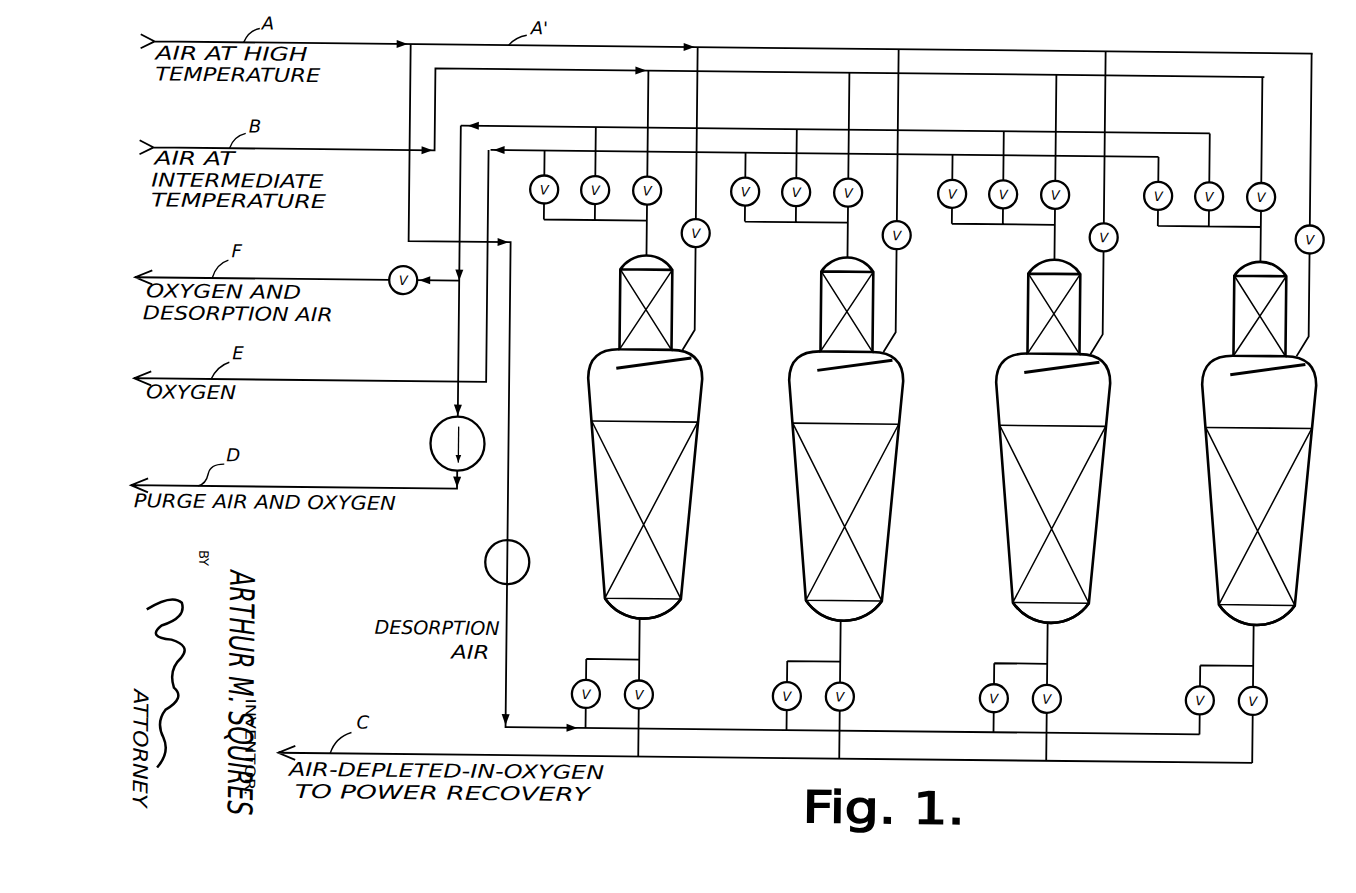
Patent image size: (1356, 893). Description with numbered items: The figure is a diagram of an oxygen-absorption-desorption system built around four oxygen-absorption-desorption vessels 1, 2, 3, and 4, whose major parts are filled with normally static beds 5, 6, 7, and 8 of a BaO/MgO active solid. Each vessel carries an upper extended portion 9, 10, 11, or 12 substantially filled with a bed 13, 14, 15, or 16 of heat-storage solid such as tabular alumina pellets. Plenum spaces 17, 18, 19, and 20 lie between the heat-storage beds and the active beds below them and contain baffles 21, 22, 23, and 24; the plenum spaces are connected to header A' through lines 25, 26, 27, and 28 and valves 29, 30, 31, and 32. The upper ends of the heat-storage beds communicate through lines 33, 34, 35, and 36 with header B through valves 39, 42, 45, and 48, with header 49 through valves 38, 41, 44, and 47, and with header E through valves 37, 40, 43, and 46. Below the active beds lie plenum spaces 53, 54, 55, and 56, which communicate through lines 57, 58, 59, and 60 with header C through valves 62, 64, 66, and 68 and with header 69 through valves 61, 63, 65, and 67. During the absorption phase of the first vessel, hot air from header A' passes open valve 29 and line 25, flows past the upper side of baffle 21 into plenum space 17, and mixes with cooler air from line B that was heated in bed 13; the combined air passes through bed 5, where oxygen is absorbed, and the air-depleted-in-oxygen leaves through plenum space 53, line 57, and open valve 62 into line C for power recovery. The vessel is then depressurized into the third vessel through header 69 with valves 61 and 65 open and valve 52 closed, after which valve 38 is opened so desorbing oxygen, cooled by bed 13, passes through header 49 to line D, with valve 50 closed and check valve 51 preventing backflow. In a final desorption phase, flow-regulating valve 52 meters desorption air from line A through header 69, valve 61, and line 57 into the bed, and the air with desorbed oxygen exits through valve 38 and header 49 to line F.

The oxygen-absorption-desorption vessel 1 is at (588, 385).
The oxygen-absorption-desorption vessel 2 is at (790, 386).
The oxygen-absorption-desorption vessel 3 is at (997, 392).
The oxygen-absorption-desorption vessel 4 is at (1203, 398).
The bed 5 is at (648, 452).
The bed 6 is at (848, 452).
The bed 7 is at (1055, 455).
The bed 8 is at (1261, 458).
The upper extended portion 9 is at (620, 301).
The upper extended portion 10 is at (821, 308).
The upper extended portion 11 is at (1028, 309).
The upper extended portion 12 is at (1234, 307).
The bed of heat-storage solid 13 is at (656, 291).
The bed of heat-storage solid 14 is at (857, 291).
The bed of heat-storage solid 15 is at (1064, 292).
The bed of heat-storage solid 16 is at (1270, 294).
The plenum space 17 is at (662, 405).
The plenum space 18 is at (866, 405).
The plenum space 19 is at (1074, 409).
The plenum space 20 is at (1280, 413).
The baffle 21 is at (626, 372).
The baffle 22 is at (830, 372).
The baffle 23 is at (1037, 378).
The baffle 24 is at (1244, 383).
The line 25 is at (694, 326).
The line 26 is at (897, 327).
The line 27 is at (1103, 328).
The line 28 is at (1310, 324).
The valve 29 is at (706, 240).
The valve 30 is at (909, 240).
The valve 31 is at (1117, 242).
The valve 32 is at (1297, 238).
The line 33 is at (646, 236).
The line 34 is at (847, 238).
The line 35 is at (1054, 238).
The line 36 is at (1260, 235).
The valve 37 is at (533, 180).
The valve 38 is at (585, 180).
The valve 39 is at (636, 180).
The valve 40 is at (734, 182).
The valve 41 is at (786, 182).
The valve 42 is at (837, 182).
The valve 43 is at (940, 183).
The valve 44 is at (991, 183).
The valve 45 is at (1043, 183).
The valve 46 is at (1145, 184).
The valve 47 is at (1196, 184).
The valve 48 is at (1248, 184).
The header 49 is at (497, 125).
The valve 50 is at (392, 270).
The check valve 51 is at (434, 424).
The flow-regulating valve 52 is at (487, 561).
The plenum space 53 is at (643, 608).
The plenum space 54 is at (844, 610).
The plenum space 55 is at (1051, 612).
The plenum space 56 is at (1257, 615).
The line 57 is at (643, 634).
The line 58 is at (845, 637).
The line 59 is at (1052, 643).
The line 60 is at (1258, 644).
The valve 61 is at (579, 683).
The valve 62 is at (656, 688).
The valve 63 is at (781, 684).
The valve 64 is at (857, 690).
The valve 65 is at (983, 686).
The valve 66 is at (1063, 691).
The valve 67 is at (1191, 688).
The valve 68 is at (1271, 693).
The header 69 is at (559, 724).